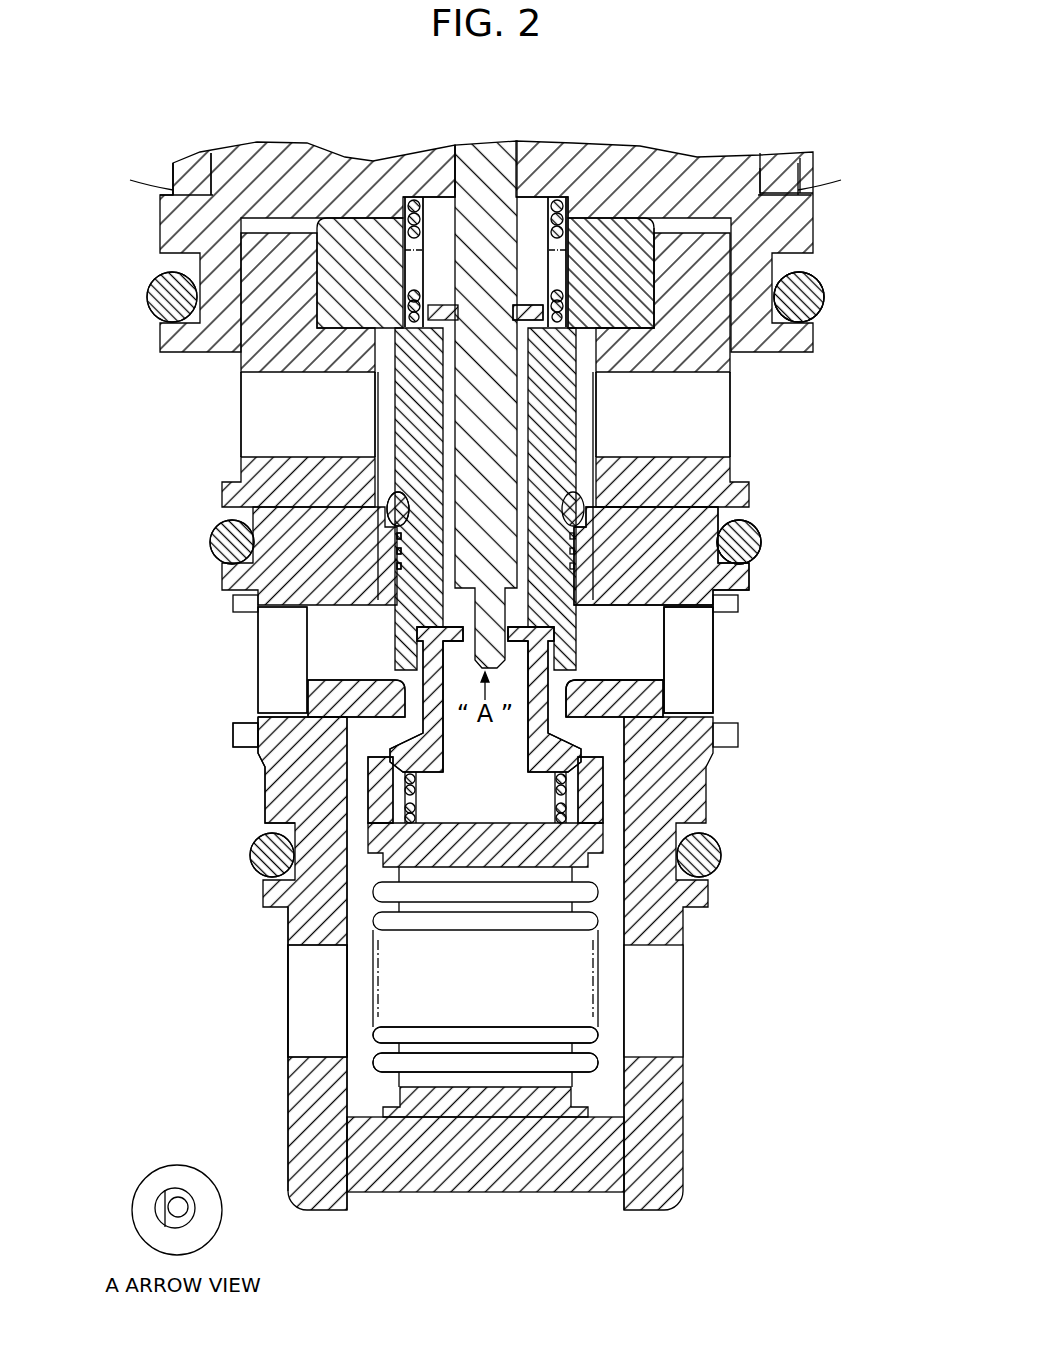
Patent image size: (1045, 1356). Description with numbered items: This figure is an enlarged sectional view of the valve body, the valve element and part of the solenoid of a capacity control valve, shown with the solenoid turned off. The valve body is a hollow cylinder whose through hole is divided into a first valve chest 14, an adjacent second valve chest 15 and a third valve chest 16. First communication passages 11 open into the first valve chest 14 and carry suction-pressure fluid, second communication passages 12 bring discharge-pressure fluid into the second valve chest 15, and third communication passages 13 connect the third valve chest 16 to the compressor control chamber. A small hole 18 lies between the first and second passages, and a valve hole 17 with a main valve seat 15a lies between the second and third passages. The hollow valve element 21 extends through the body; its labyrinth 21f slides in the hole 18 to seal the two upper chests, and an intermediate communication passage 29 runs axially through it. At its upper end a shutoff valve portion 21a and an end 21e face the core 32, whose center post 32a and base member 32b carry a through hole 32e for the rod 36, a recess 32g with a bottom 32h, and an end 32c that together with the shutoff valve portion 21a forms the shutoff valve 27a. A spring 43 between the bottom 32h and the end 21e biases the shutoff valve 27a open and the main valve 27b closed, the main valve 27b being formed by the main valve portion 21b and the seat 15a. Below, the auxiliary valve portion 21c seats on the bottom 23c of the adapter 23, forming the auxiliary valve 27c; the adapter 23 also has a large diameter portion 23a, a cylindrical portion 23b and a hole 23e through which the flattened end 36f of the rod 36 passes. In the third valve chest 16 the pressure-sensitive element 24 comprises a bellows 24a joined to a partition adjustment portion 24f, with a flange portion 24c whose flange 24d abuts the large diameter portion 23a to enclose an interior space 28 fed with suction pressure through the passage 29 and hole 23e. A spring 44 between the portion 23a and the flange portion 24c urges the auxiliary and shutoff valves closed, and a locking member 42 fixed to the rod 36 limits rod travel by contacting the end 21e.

The first communication passages 11 is at (290, 400).
The second communication passages 12 is at (300, 648).
The third communication passages 13 is at (305, 985).
The first valve chest 14 is at (385, 440).
The second valve chest 15 is at (365, 678).
The main valve seat 15a is at (575, 672).
The third valve chest 16 is at (355, 1035).
The valve hole 17 is at (672, 700).
The hole 18 is at (378, 492).
The valve element 21 is at (700, 440).
The shutoff valve portion 21a is at (700, 355).
The main valve portion 21b is at (565, 653).
The auxiliary valve portion 21c is at (585, 575).
The end of the valve element 21e is at (822, 300).
The labyrinth 21f is at (398, 545).
The adapter 23 is at (147, 700).
The large diameter portion 23a is at (263, 778).
The cylindrical portion 23b is at (256, 727).
The bottom 23c is at (742, 545).
The hole 23e is at (428, 650).
The pressure-sensitive element 24 is at (607, 960).
The bellows 24a is at (598, 1033).
The flange portion 24c is at (388, 790).
The flange 24d is at (296, 833).
The partition adjustment portion 24f is at (492, 1178).
The shutoff valve 27a is at (882, 332).
The main valve 27b is at (805, 603).
The auxiliary valve 27c is at (856, 505).
The interior space 28 is at (474, 770).
The intermediate communication passage 29 is at (720, 410).
The core 32 is at (82, 160).
The center post 32a is at (235, 181).
The base member 32b is at (350, 242).
The end of the core 32c is at (562, 318).
The through hole 32e is at (458, 190).
The recess 32g is at (428, 205).
The bottom of the recess 32h is at (540, 200).
The rod 36 is at (487, 165).
The end of the rod 36f is at (452, 628).
The locking member 42 is at (545, 292).
The spring 43 is at (566, 200).
The spring 44 is at (722, 875).